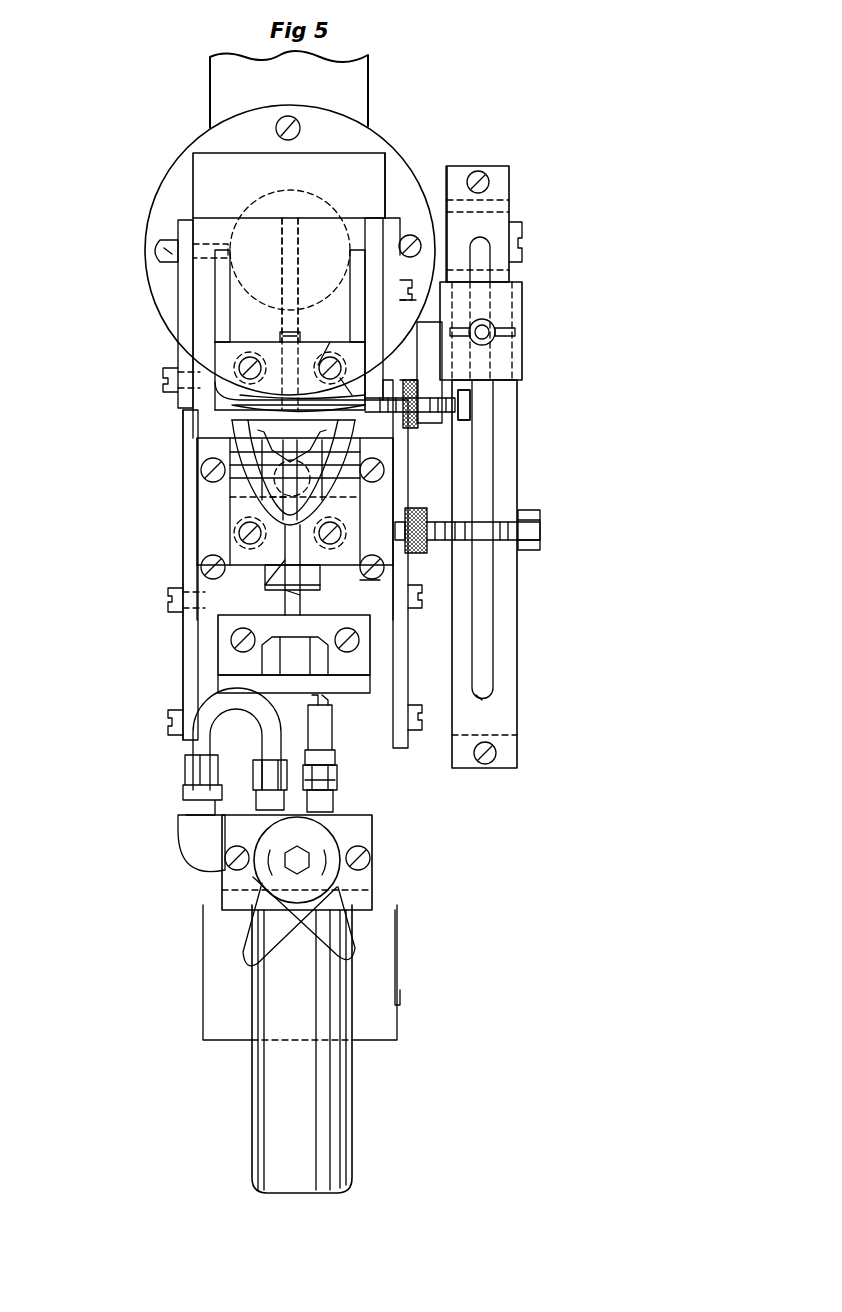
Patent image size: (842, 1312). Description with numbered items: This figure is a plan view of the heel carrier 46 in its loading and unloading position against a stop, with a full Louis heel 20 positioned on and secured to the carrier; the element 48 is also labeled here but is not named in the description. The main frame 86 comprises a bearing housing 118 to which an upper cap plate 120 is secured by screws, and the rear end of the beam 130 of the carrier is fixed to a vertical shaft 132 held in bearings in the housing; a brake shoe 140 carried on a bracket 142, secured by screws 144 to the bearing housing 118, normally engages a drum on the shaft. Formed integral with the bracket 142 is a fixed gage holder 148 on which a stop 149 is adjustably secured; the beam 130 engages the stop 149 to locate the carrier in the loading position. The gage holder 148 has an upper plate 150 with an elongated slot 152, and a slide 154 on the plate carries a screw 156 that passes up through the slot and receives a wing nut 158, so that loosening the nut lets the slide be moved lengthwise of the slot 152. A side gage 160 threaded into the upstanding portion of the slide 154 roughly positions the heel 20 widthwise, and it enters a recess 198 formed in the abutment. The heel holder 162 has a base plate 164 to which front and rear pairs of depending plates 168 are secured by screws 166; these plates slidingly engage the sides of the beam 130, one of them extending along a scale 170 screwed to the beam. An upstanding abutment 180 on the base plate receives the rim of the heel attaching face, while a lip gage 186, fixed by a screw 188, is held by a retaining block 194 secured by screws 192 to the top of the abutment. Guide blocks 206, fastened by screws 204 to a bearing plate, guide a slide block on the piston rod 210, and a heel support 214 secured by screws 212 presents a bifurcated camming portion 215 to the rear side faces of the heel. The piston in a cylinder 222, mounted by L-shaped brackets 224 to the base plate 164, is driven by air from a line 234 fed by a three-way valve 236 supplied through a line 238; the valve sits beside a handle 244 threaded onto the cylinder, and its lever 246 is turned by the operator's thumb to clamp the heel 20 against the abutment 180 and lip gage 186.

The full Louis heel 20 is at (285, 585).
The heel carrier 46 is at (118, 646).
The cylinder 48 is at (292, 245).
The main frame 86 is at (212, 70).
The bearing housing 118 is at (395, 150).
The upper cap plate 120 is at (175, 194).
The beam 130 is at (365, 150).
The vertical shaft 132 is at (322, 198).
The brake shoe 140 is at (421, 361).
The bracket 142 is at (510, 192).
The screws 144 is at (522, 240).
The gage holder 148 is at (562, 241).
The stop 149 is at (398, 515).
The upper plate 150 is at (512, 418).
The elongated slot 152 is at (488, 650).
The slide 154 is at (522, 322).
The screw 156 is at (490, 325).
The wing nut 158 is at (495, 338).
The side gage 160 is at (385, 418).
The heel holder 162 is at (172, 464).
The base plate 164 is at (218, 218).
The screws 166 is at (406, 302).
The depending plates 168 is at (178, 290).
The scale 170 is at (400, 452).
The abutment 180 is at (230, 262).
The lip gage 186 is at (232, 400).
The screw 188 is at (278, 338).
The screws 192 is at (240, 366).
The retaining block 194 is at (300, 345).
The recess 198 is at (340, 360).
The screws 204 is at (385, 568).
The guide blocks 206 is at (197, 478).
The piston rod 210 is at (300, 592).
The screws 212 is at (240, 530).
The heel support 214 is at (355, 490).
The bifurcated camming portion 215 is at (268, 496).
The cylinder 222 is at (338, 782).
The L-shaped brackets 224 is at (368, 650).
The line 234 is at (195, 742).
The three-way valve 236 is at (372, 842).
The line 238 is at (335, 800).
The handle 244 is at (272, 1082).
The lever 246 is at (282, 950).